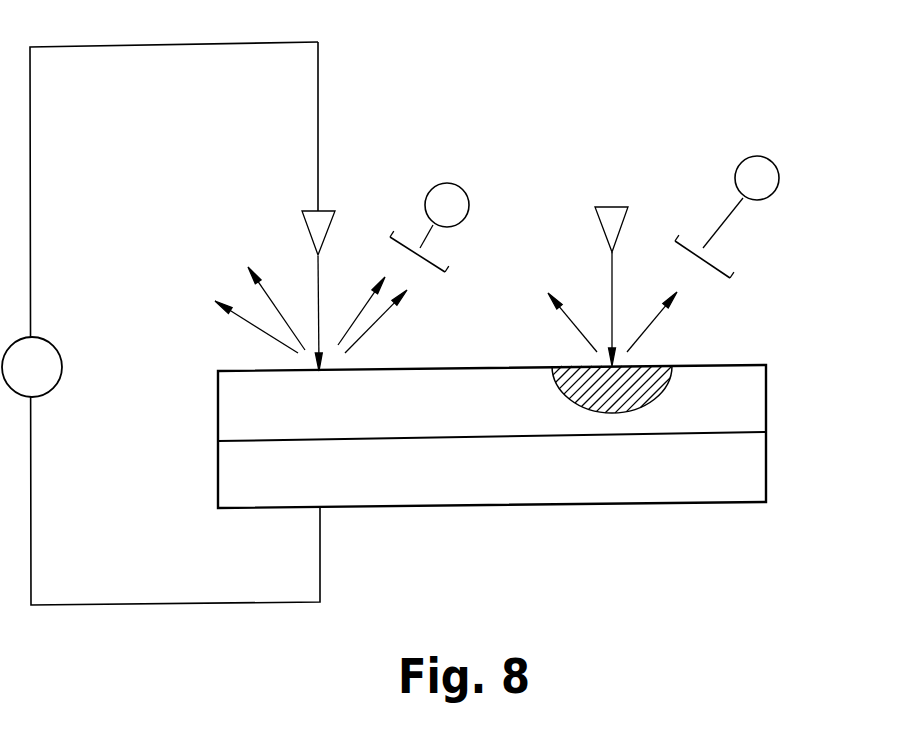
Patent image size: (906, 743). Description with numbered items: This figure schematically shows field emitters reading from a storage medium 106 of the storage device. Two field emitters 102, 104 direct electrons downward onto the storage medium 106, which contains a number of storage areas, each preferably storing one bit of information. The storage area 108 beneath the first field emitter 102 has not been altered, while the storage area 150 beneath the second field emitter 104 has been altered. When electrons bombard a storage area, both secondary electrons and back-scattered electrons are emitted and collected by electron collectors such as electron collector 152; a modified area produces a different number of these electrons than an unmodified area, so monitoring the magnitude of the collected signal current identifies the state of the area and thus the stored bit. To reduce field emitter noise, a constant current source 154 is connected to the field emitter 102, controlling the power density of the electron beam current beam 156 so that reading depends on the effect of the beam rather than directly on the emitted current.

The field emitter 102 is at (325, 218).
The field emitter 104 is at (613, 215).
The storage medium 106 is at (798, 423).
The storage area 108 is at (353, 362).
The storage area 150 is at (653, 358).
The electron collector 152 is at (767, 170).
The constant current source 154 is at (51, 343).
The electron beam current beam 156 is at (318, 280).